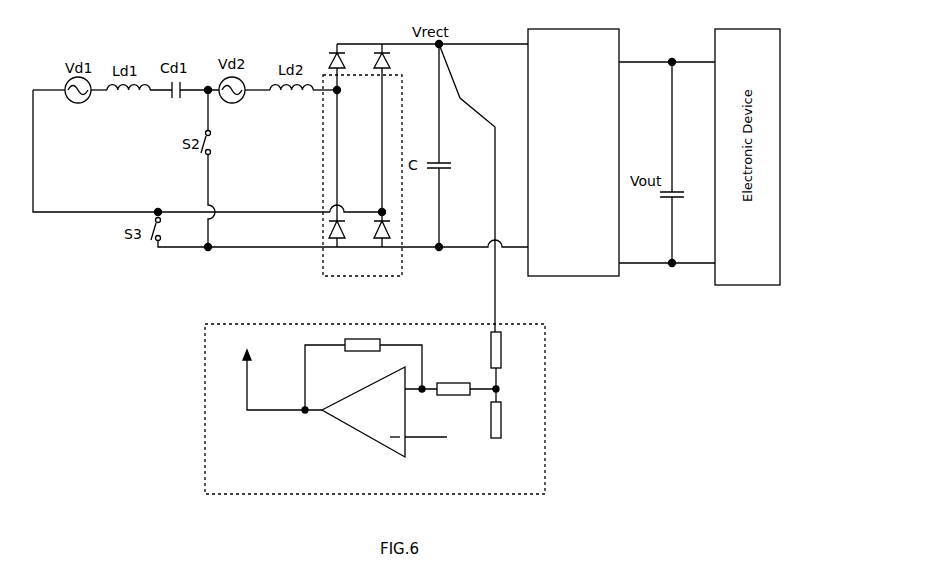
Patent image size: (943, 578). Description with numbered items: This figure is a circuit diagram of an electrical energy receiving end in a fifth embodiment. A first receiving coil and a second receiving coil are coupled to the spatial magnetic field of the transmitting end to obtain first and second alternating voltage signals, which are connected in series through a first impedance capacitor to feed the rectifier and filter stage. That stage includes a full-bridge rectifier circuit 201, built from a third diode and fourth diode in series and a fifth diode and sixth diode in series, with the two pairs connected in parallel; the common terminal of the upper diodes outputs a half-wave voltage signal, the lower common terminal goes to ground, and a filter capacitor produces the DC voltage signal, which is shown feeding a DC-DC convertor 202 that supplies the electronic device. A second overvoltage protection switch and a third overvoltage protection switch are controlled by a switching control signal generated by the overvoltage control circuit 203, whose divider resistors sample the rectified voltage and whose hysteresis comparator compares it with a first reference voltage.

The full-bridge rectifier circuit 201 is at (383, 271).
The DC-DC convertor 202 is at (578, 268).
The overvoltage control circuit 203 is at (357, 483).